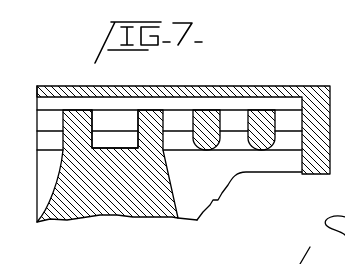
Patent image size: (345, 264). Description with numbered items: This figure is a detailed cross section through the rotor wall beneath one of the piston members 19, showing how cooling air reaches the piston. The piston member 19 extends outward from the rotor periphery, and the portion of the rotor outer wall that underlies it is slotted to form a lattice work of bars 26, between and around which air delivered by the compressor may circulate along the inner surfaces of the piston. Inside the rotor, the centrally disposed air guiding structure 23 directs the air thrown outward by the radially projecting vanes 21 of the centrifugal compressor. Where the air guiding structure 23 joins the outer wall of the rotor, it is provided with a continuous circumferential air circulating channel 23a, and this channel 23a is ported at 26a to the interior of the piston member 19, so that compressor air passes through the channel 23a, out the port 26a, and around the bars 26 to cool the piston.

The piston member 19 is at (252, 91).
The vanes 21 is at (223, 163).
The air guiding structure 23 is at (147, 197).
The air circulating channel 23a is at (125, 140).
The bars 26 is at (207, 142).
The port 26a is at (100, 124).